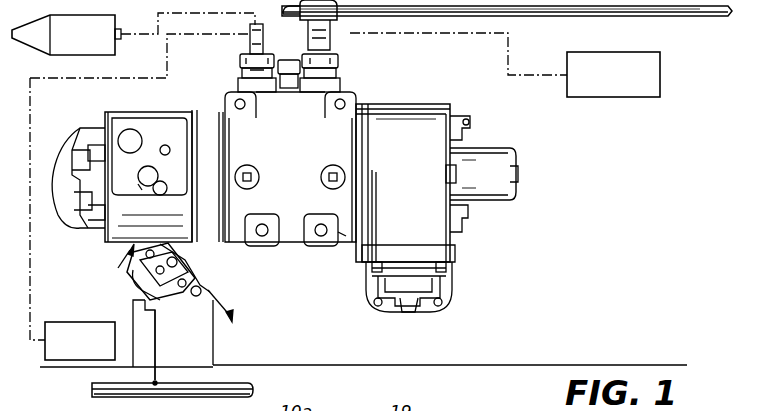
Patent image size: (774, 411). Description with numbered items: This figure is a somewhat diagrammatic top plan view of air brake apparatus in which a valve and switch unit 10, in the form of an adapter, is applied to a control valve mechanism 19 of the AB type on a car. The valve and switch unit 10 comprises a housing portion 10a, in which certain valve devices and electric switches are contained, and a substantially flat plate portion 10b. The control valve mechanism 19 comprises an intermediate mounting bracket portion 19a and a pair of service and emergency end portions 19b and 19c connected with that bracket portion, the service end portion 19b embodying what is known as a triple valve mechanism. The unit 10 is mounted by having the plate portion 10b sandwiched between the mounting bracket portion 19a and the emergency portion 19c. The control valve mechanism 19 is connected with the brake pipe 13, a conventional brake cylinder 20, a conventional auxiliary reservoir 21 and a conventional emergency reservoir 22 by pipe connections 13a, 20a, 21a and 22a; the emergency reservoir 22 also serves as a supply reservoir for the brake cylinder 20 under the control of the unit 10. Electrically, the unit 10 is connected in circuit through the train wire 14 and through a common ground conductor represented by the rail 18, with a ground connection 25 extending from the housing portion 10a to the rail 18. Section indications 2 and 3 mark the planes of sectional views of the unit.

The section line / valves 2 is at (187, 110).
The section line 3 is at (176, 293).
The valve and switch unit 10 is at (216, 195).
The housing portion 10a is at (180, 296).
The plate portion 10b is at (218, 155).
The brake pipe 13 is at (540, 16).
The pipe connection 13a is at (326, 35).
The train wire 14 is at (583, 365).
The rail 18 is at (95, 391).
The control valve mechanism 19 is at (352, 100).
The intermediate mounting bracket portion 19a is at (345, 243).
The service end portion 19b is at (428, 240).
The emergency end portion 19c is at (138, 126).
The brake cylinder 20 is at (101, 55).
The pipe connection 20a is at (190, 15).
The auxiliary reservoir 21 is at (605, 97).
The pipe connection 21a is at (443, 33).
The emergency reservoir 22 is at (68, 322).
The pipe connection 22a is at (34, 97).
The ground connection 25 is at (158, 356).